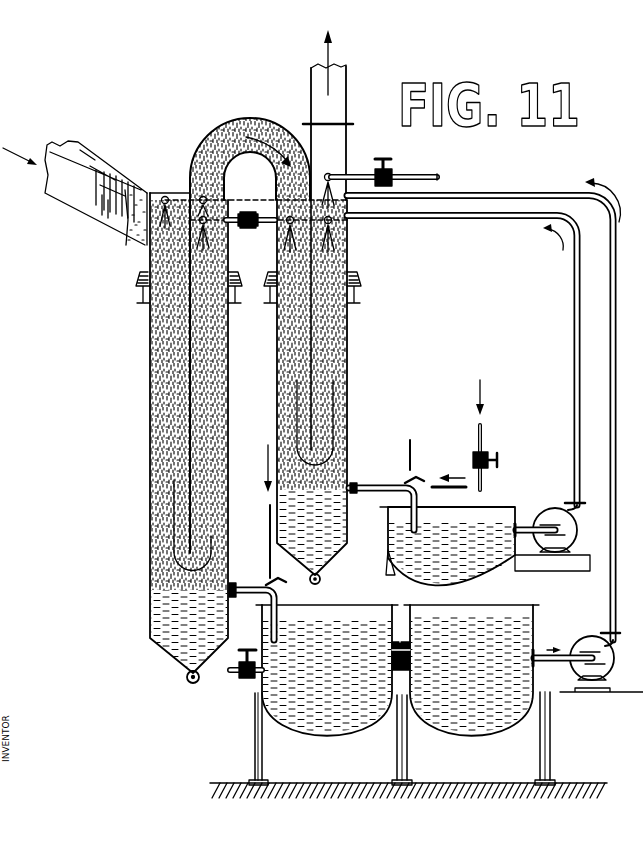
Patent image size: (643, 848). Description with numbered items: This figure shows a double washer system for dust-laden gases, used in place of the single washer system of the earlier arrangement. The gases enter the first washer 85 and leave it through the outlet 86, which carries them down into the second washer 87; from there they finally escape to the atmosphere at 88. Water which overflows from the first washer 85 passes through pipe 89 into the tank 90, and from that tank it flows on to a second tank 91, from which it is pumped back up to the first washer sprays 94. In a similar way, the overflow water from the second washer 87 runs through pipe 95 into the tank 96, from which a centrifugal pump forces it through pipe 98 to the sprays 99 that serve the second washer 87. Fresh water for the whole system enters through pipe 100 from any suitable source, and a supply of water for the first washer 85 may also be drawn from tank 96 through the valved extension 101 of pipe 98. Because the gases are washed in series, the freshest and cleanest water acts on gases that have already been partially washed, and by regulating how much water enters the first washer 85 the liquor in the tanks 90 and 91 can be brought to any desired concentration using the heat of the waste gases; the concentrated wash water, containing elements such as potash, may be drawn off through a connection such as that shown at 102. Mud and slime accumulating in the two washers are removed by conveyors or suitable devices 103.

The first washer 85 is at (150, 352).
The outlet 86 is at (249, 125).
The second washer 87 is at (348, 343).
The atmosphere escape 88 is at (344, 86).
The pipe 89 is at (251, 585).
The tank 90 is at (393, 605).
The second tank 91 is at (552, 508).
The first washer sprays 94 is at (167, 196).
The pipe 95 is at (388, 477).
The tank 96 is at (490, 506).
The pipe 98 is at (572, 323).
The sprays 99 is at (293, 224).
The pipe 100 is at (438, 178).
The valved extension 101 is at (251, 226).
The connection 102 is at (243, 679).
The conveyors or suitable devices 103 is at (188, 681).